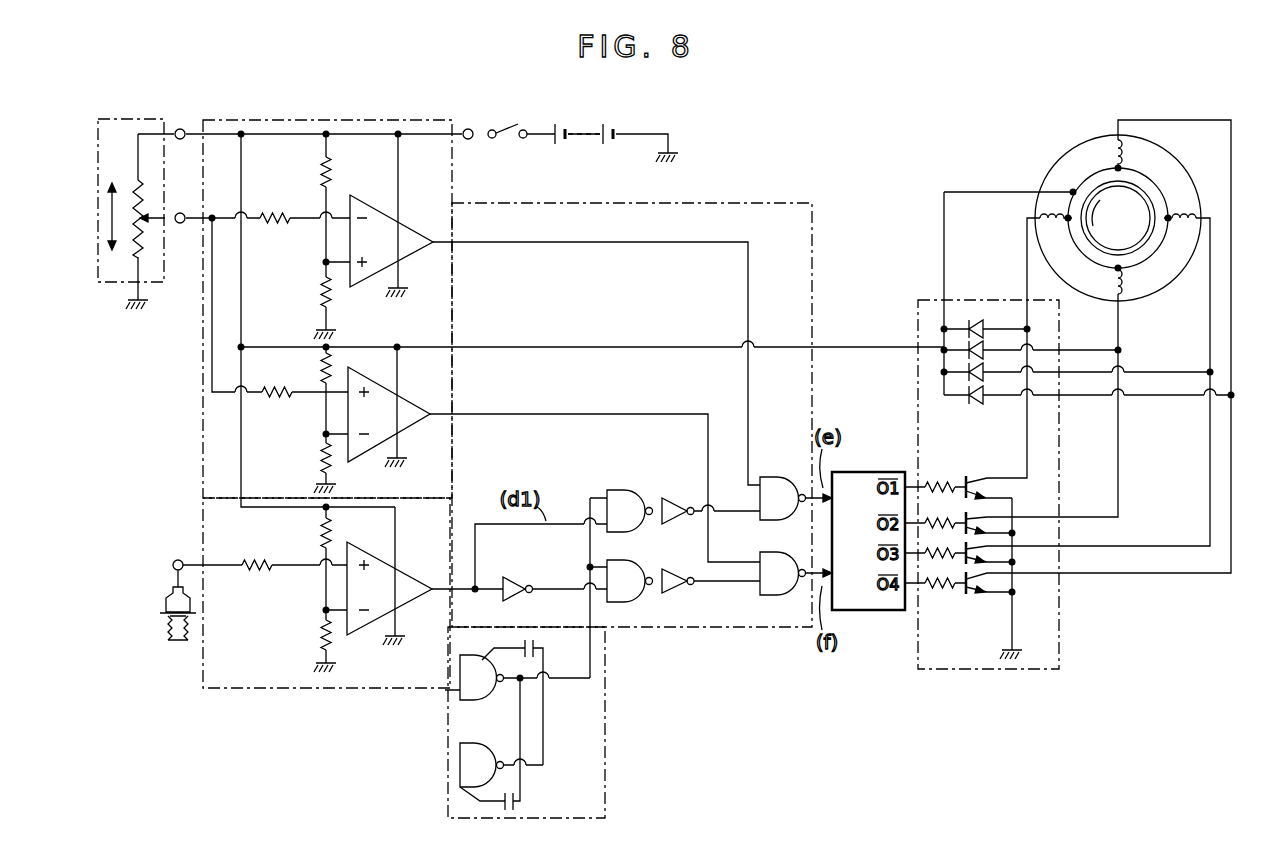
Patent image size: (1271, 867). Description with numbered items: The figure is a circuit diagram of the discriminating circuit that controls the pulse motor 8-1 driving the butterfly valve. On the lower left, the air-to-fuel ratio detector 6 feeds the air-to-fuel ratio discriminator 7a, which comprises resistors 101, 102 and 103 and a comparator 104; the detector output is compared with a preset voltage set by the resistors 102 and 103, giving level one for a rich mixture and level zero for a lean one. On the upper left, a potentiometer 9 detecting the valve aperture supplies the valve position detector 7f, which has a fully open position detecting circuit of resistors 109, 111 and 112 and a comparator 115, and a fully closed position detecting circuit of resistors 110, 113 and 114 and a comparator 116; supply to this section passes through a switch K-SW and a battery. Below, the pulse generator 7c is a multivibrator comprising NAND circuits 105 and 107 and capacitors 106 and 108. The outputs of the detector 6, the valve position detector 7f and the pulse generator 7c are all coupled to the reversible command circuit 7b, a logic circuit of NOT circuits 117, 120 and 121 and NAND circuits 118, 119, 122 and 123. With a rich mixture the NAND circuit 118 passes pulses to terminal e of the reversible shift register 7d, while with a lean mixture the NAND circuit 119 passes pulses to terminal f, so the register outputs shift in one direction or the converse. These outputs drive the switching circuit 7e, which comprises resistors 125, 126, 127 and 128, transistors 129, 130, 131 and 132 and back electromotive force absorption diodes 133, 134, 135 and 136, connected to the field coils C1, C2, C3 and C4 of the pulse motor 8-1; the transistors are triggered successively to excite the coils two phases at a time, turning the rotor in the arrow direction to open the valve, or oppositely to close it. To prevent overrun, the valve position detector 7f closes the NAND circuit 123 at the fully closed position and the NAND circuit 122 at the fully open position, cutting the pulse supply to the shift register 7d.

The potentiometer 9 is at (160, 119).
The air-to-fuel ratio detector 6 is at (160, 634).
The air-to-fuel ratio discriminator 7a is at (325, 690).
The reversible command circuit 7b is at (746, 628).
The pulse generator 7c is at (606, 735).
The reversible shift register 7d is at (876, 612).
The switching circuit 7e is at (950, 670).
The valve position detector 7f is at (300, 120).
The pulse motor 8-1 is at (1062, 166).
The key switch K-SW is at (565, 126).
The resistor 101 is at (271, 577).
The resistor 102 is at (320, 538).
The resistor 103 is at (320, 633).
The comparator 104 is at (418, 582).
The NAND circuit 105 is at (448, 692).
The capacitor 106 is at (537, 648).
The NAND circuit 107 is at (460, 783).
The capacitor 108 is at (516, 795).
The resistor 109 is at (285, 216).
The resistor 110 is at (290, 399).
The resistor 111 is at (334, 176).
The resistor 112 is at (318, 291).
The resistor 113 is at (318, 365).
The resistor 114 is at (320, 458).
The comparator 115 is at (428, 236).
The comparator 116 is at (428, 409).
The NOT circuit 117 is at (521, 596).
The NAND circuit 118 is at (630, 489).
The NAND circuit 119 is at (626, 604).
The NOT circuit 120 is at (673, 498).
The NOT circuit 121 is at (680, 591).
The NAND circuit 122 is at (783, 477).
The NAND circuit 123 is at (779, 594).
The resistor 125 is at (954, 484).
The resistor 126 is at (958, 518).
The resistor 127 is at (957, 541).
The resistor 128 is at (958, 580).
The transistor 129 is at (980, 482).
The transistor 130 is at (1000, 519).
The transistor 131 is at (992, 558).
The transistor 132 is at (992, 588).
The back electromotive force absorption diode 133 is at (975, 319).
The back electromotive force absorption diode 134 is at (962, 348).
The back electromotive force absorption diode 135 is at (962, 370).
The back electromotive force absorption diode 136 is at (976, 400).
The field coil C1 is at (1046, 228).
The field coil C2 is at (1125, 288).
The field coil C3 is at (1186, 212).
The field coil C4 is at (1125, 152).